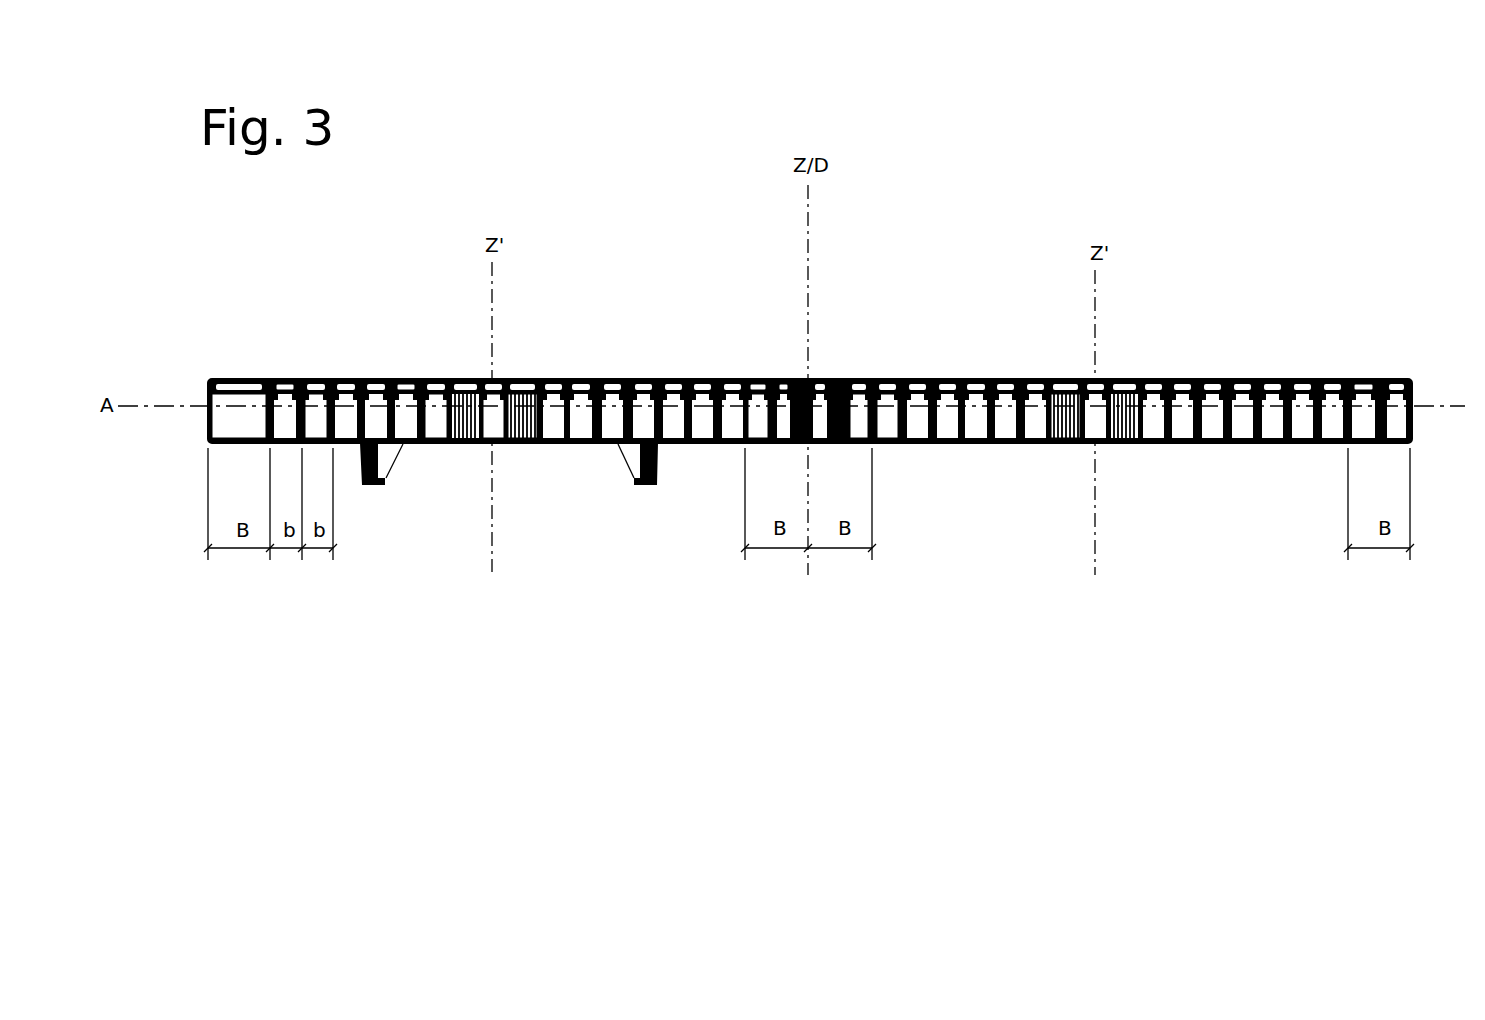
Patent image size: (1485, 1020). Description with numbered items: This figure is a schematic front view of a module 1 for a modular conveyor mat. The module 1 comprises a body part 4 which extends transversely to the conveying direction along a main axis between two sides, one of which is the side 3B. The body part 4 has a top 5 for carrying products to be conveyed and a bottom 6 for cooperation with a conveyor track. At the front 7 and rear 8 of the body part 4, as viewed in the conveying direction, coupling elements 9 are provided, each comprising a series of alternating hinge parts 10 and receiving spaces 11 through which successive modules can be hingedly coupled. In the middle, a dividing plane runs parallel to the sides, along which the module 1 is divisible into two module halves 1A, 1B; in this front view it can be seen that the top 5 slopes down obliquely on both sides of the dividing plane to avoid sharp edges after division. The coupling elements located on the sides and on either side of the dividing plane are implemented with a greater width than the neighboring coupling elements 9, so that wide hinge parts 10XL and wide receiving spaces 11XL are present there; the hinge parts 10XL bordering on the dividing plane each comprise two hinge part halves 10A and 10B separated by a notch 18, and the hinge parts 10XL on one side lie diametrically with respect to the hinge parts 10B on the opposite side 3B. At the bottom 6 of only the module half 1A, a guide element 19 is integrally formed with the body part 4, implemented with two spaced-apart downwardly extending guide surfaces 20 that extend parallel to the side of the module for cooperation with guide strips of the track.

The module 1 is at (992, 485).
The module half 1A is at (498, 385).
The module half 1B is at (1065, 384).
The side 3B is at (1410, 406).
The body part 4 is at (923, 384).
The top 5 is at (635, 382).
The bottom 6 is at (511, 441).
The front 7 is at (293, 393).
The rear 8 is at (757, 418).
The coupling elements 9 is at (383, 382).
The hinge parts 10 is at (313, 395).
The hinge part half 10A is at (797, 425).
The hinge part half 10B is at (877, 430).
The hinge parts of greater width 10XL is at (199, 393).
The receiving spaces 11 is at (258, 387).
The receiving spaces of greater width 11XL is at (790, 382).
The notch 18 is at (862, 405).
The guide element 19 is at (386, 465).
The guide surfaces 20 is at (360, 468).